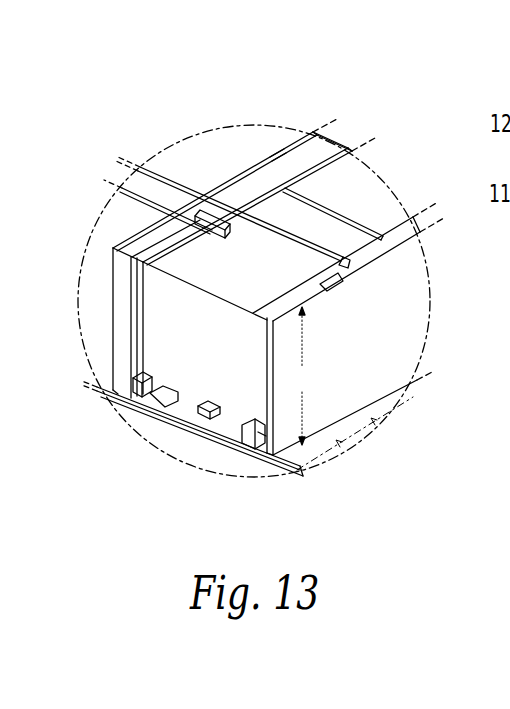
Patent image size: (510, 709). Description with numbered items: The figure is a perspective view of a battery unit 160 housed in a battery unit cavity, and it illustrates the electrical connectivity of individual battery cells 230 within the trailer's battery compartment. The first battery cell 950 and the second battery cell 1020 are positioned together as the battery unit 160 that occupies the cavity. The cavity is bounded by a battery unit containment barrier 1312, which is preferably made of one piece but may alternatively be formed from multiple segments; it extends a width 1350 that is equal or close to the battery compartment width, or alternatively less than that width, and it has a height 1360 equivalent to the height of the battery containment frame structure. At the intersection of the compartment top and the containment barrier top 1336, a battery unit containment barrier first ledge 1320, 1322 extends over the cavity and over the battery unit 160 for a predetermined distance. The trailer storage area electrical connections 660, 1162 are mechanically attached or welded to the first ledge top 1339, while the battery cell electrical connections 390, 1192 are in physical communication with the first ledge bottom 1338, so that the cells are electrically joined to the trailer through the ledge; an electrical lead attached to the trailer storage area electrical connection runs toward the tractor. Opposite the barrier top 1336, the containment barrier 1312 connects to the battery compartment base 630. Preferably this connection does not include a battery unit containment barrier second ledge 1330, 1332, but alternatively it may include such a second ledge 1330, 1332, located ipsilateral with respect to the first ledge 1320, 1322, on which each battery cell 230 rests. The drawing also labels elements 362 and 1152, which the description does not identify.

The battery cell electrical connection 390 is at (277, 150).
The battery cell electrical connection 1192 is at (275, 111).
The trailer storage area electrical connection 660 is at (205, 212).
The trailer storage area electrical connection 1162 is at (305, 239).
The battery unit containment barrier first ledge bottom 1338 is at (350, 170).
The battery unit 160 is at (336, 170).
The first battery cell 950 is at (388, 208).
The battery unit containment barrier first ledge 1320 is at (413, 224).
The battery unit containment barrier first ledge top 1339 is at (338, 278).
The battery unit containment barrier first ledge 1322 is at (150, 248).
The battery unit containment barrier 1312 is at (130, 292).
The second battery cell 1020 is at (285, 262).
The battery cell 230 is at (246, 291).
The height 1360 is at (302, 376).
The width 1350 is at (345, 441).
The battery unit containment barrier second ledge 1330 is at (257, 455).
The battery unit containment barrier second ledge 1332 is at (137, 405).
The battery compartment containment barrier top 1336 is at (265, 322).
The clip 362 is at (220, 418).
The battery compartment base 630 is at (238, 447).
The fastener 1152 is at (118, 393).